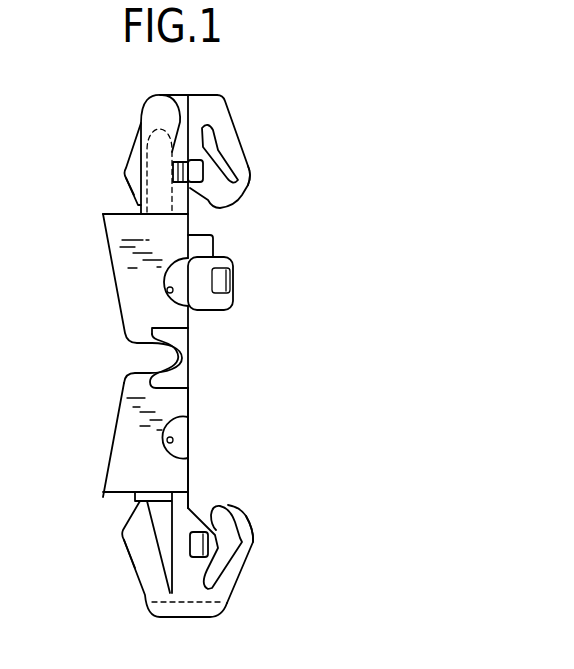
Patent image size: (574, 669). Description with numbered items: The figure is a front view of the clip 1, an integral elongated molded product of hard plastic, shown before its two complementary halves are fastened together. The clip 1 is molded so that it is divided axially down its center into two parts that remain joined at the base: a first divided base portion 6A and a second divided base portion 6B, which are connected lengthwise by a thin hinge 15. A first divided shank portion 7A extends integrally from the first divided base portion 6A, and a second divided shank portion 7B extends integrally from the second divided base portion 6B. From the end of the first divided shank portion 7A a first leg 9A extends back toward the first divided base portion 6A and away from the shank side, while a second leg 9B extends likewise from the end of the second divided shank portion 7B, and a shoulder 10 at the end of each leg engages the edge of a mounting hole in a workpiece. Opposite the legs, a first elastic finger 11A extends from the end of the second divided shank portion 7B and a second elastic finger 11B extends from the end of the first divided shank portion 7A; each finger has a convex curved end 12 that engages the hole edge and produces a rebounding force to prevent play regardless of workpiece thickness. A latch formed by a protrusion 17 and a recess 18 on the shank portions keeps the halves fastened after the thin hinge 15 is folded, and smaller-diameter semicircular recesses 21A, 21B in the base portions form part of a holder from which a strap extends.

The clip 1 is at (350, 166).
The first divided base portion 6A is at (133, 273).
The second divided base portion 6B is at (132, 428).
The first divided shank portion 7A is at (162, 97).
The second divided shank portion 7B is at (178, 542).
The first leg 9A is at (125, 170).
The second leg 9B is at (143, 567).
The shoulder 10 is at (130, 184).
The first elastic finger 11A is at (237, 570).
The second elastic finger 11B is at (232, 138).
The curved end 12 is at (244, 197).
The thin hinge 15 is at (183, 354).
The protrusion 17 is at (173, 170).
The recess 18 is at (192, 530).
The semicircular recess 21A is at (168, 299).
The semicircular recess 21B is at (170, 452).